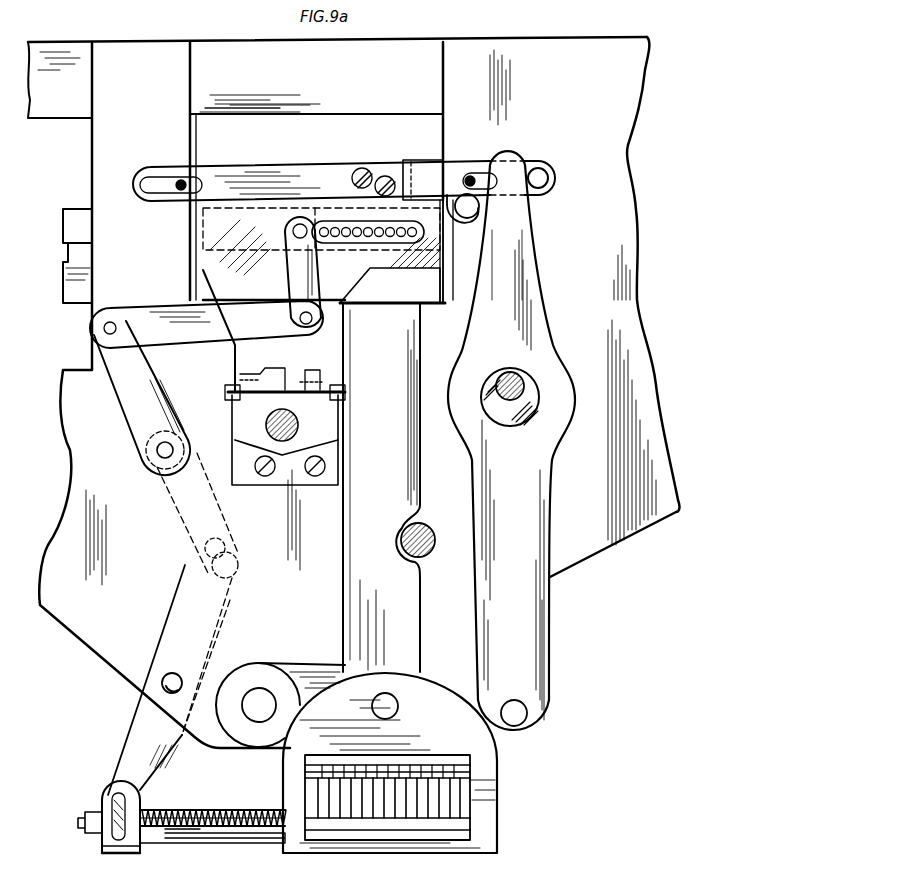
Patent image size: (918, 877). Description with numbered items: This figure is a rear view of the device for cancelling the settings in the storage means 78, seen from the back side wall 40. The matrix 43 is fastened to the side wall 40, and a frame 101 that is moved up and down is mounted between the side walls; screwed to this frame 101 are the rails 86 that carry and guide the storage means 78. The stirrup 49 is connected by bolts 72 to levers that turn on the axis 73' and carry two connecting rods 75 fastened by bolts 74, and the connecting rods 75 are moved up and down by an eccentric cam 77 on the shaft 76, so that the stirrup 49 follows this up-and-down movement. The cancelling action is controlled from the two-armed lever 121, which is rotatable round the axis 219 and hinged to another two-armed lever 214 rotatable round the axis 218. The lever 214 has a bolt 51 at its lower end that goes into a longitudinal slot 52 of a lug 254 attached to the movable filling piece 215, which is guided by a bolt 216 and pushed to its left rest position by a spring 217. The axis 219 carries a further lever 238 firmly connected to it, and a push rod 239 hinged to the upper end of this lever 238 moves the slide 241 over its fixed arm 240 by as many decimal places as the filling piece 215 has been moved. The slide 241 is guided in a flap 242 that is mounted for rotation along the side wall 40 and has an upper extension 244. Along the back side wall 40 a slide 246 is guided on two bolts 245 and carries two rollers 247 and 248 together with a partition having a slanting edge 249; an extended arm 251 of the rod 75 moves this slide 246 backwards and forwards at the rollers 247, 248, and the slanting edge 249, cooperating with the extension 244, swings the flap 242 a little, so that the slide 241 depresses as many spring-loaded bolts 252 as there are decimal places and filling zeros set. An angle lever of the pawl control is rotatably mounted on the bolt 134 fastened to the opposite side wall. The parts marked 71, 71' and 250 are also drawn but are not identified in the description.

The side wall 40 is at (68, 500).
The matrix 43 is at (276, 116).
The stirrup 49 is at (488, 774).
The bolt 51 is at (114, 800).
The longitudinal slot 52 is at (112, 838).
The plate 71 is at (396, 487).
The plate 71' is at (347, 625).
The bolts 72 is at (400, 706).
The axis 73' is at (280, 688).
The bolts 74 is at (530, 715).
The connecting rods 75 is at (542, 500).
The shaft 76 is at (524, 380).
The eccentric cam 77 is at (538, 410).
The storage means 78 is at (63, 226).
The rails 86 is at (63, 278).
The frame 101 is at (444, 288).
The two-armed lever 121 is at (180, 512).
The bolt 134 is at (430, 530).
The two-armed lever 214 is at (136, 732).
The filling piece 215 is at (215, 841).
The bolt 216 is at (230, 809).
The spring 217 is at (180, 809).
The axis 218 is at (162, 686).
The axis 219 is at (158, 455).
The lever 238 is at (124, 393).
The push rod 239 is at (196, 331).
The fixed arm 240 is at (288, 270).
The slide 241 is at (203, 232).
The flap 242 is at (357, 294).
The upper extension 244 is at (424, 165).
The bolts 245 is at (180, 181).
The slide 246 is at (243, 160).
The roller 247 is at (549, 176).
The roller 248 is at (462, 219).
The slanting edge 249 is at (385, 176).
The screw 250 is at (352, 178).
The extended arm 251 is at (527, 216).
The bolts 252 is at (380, 238).
The lug 254 is at (114, 858).